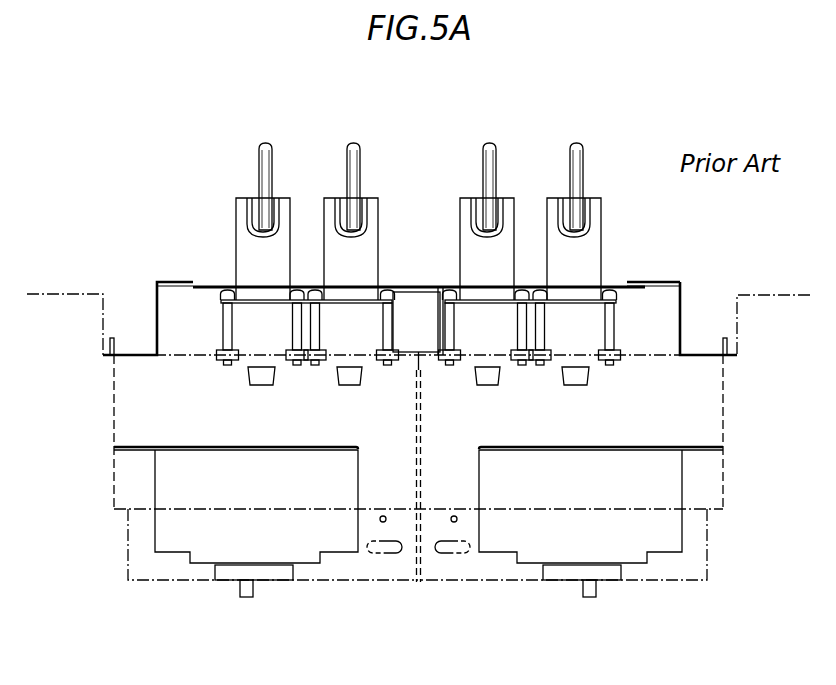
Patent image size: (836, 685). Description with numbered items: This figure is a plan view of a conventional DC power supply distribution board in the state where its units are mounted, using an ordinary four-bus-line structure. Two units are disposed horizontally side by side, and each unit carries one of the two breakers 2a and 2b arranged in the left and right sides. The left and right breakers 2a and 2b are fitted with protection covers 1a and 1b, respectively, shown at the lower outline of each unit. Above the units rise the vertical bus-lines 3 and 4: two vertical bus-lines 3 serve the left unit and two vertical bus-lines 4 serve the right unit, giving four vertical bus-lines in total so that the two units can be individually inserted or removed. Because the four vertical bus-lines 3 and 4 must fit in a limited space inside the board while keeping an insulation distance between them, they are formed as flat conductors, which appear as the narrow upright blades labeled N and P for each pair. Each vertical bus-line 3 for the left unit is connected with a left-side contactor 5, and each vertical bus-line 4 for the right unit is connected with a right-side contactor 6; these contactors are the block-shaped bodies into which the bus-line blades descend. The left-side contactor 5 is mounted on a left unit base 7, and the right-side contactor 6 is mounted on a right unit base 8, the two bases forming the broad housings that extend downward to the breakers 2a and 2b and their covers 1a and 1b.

The protection cover 1a is at (172, 580).
The protection cover 1b is at (663, 580).
The breaker 2a is at (246, 597).
The breaker 2b is at (590, 597).
The vertical bus-line 3 is at (266, 143).
The vertical bus-line 4 is at (490, 143).
The left-side contactor 5 is at (236, 237).
The right-side contactor 6 is at (460, 251).
The left unit base 7 is at (113, 427).
The right unit base 8 is at (724, 427).